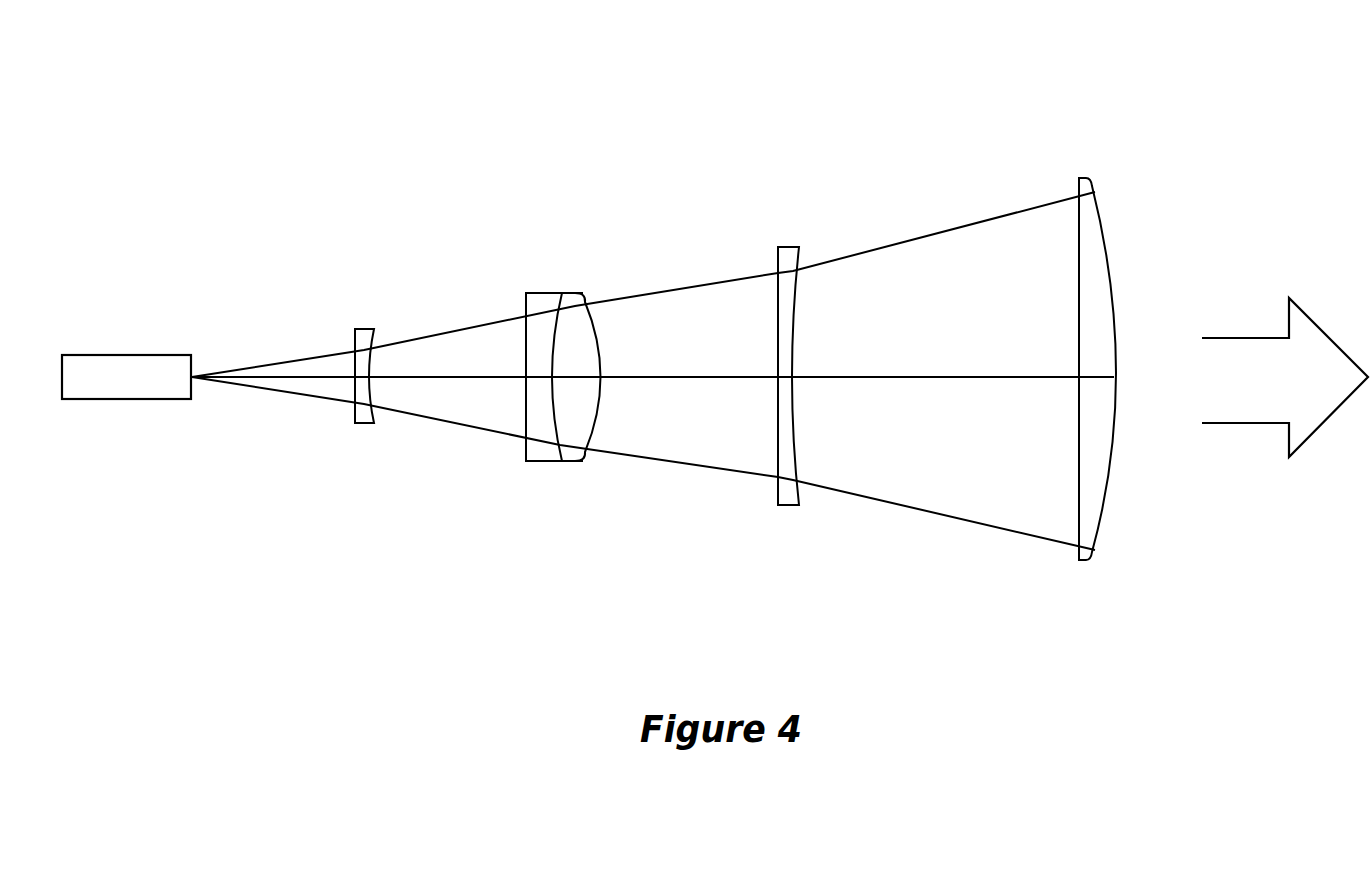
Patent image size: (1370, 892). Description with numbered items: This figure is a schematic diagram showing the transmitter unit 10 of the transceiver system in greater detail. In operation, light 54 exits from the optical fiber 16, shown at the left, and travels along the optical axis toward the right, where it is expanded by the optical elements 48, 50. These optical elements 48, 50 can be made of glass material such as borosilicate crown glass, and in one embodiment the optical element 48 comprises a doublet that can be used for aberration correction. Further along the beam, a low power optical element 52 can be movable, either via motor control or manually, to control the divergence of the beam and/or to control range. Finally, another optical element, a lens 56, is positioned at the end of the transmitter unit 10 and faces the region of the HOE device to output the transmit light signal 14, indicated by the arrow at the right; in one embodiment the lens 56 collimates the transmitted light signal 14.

The transmitter unit 10 is at (458, 112).
The transmit light signal 14 is at (1285, 377).
The optical fiber 16 is at (142, 365).
The optical element 48 is at (537, 302).
The optical element 50 is at (367, 338).
The optical element 52 is at (787, 260).
The light 54 is at (330, 388).
The lens 56 is at (1098, 242).